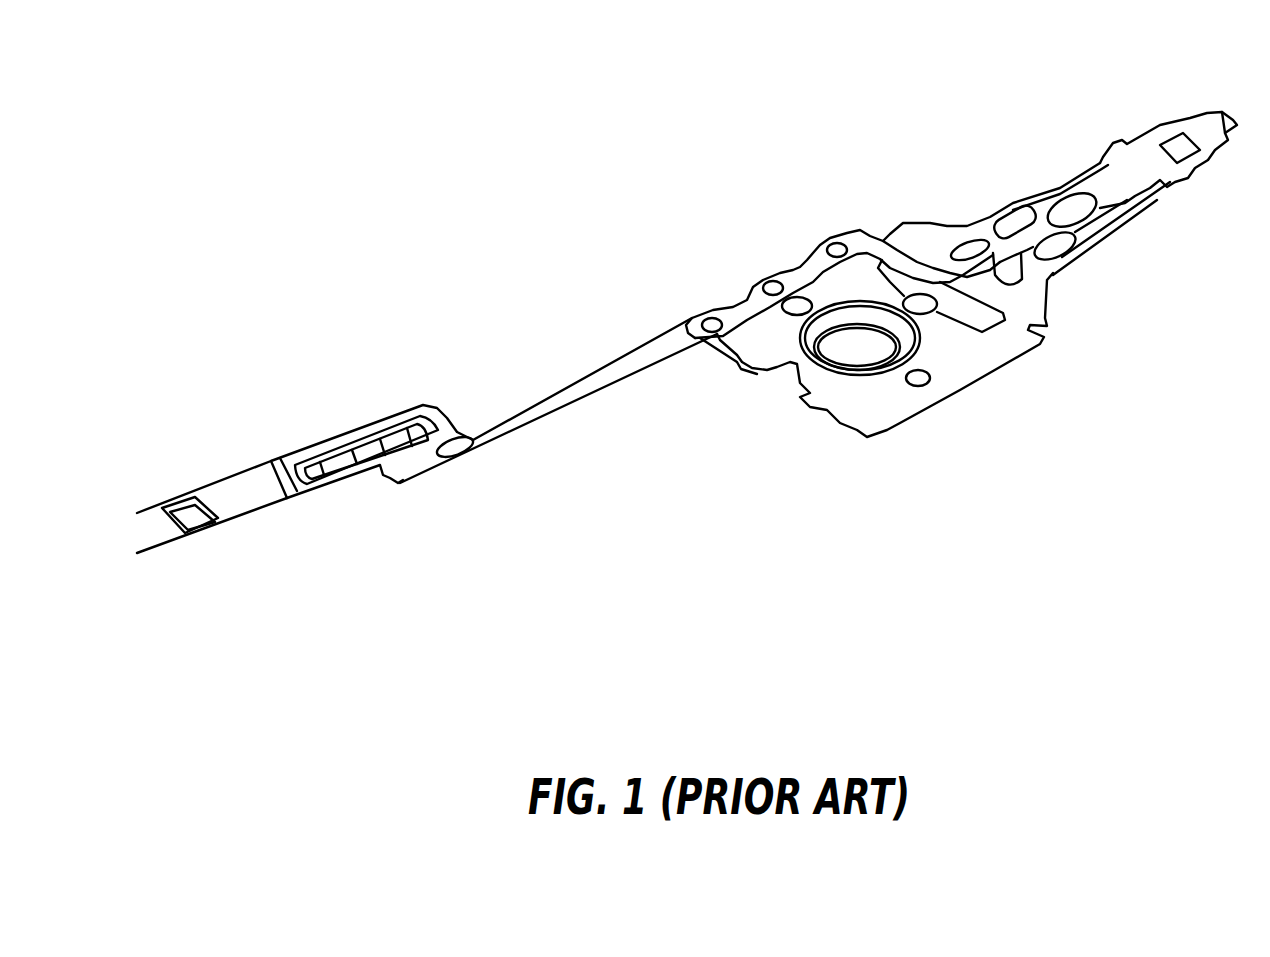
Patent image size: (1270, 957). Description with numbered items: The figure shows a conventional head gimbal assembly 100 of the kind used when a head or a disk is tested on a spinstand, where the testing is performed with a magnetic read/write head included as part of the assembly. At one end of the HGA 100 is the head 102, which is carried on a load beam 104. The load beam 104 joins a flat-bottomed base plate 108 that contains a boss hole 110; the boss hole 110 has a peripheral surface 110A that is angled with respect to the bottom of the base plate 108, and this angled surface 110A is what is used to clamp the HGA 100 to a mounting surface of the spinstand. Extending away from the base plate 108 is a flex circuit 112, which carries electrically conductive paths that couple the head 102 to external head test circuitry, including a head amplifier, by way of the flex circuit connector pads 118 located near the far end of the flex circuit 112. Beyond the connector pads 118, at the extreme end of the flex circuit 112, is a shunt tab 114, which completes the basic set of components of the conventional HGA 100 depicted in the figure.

The head gimbal assembly 100 is at (1082, 424).
The head 102 is at (1188, 145).
The load beam 104 is at (1079, 235).
The base plate 108 is at (893, 412).
The boss hole 110 is at (847, 355).
The angled peripheral surface 110A is at (812, 343).
The flex circuit 112 is at (520, 405).
The shunt tab 114 is at (208, 527).
The flex circuit pads 118 is at (348, 437).